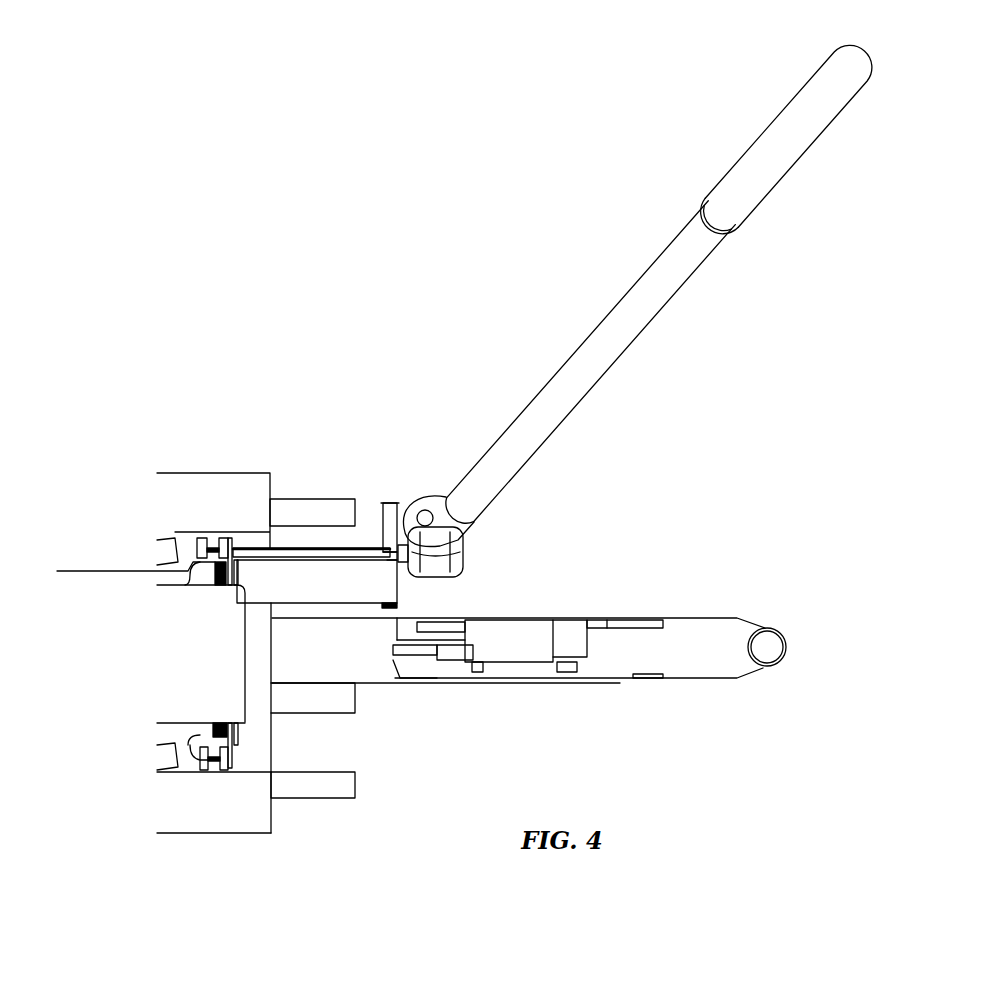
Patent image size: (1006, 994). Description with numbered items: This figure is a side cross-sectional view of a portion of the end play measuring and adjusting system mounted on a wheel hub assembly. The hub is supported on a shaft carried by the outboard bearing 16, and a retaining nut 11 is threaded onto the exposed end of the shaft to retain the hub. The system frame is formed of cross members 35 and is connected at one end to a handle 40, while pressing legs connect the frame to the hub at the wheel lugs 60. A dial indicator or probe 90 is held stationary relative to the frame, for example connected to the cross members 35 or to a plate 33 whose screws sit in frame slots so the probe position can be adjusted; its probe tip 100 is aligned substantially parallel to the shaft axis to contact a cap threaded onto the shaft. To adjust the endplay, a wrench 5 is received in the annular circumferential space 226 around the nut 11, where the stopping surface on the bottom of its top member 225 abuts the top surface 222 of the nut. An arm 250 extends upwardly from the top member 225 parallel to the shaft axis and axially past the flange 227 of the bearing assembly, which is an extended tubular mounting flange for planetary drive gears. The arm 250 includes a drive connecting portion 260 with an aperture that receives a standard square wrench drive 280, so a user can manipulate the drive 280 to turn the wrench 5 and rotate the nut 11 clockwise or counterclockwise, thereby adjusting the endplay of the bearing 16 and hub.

The wrench 5 is at (685, 250).
The retaining nut 11 is at (135, 630).
The outboard bearing 16 is at (177, 780).
The plate 33 is at (570, 663).
The cross members 35 is at (587, 678).
The handle 40 is at (785, 643).
The wheel lugs 60 is at (300, 510).
The probe 90 is at (508, 635).
The probe tip 100 is at (407, 680).
The top surface of nut 222 is at (237, 732).
The top member 225 is at (233, 758).
The annular circumferential space 226 is at (412, 605).
The flange 227 is at (190, 490).
The arm 250 is at (315, 578).
The drive connecting portion 260 is at (385, 505).
The square wrench drive 280 is at (853, 73).